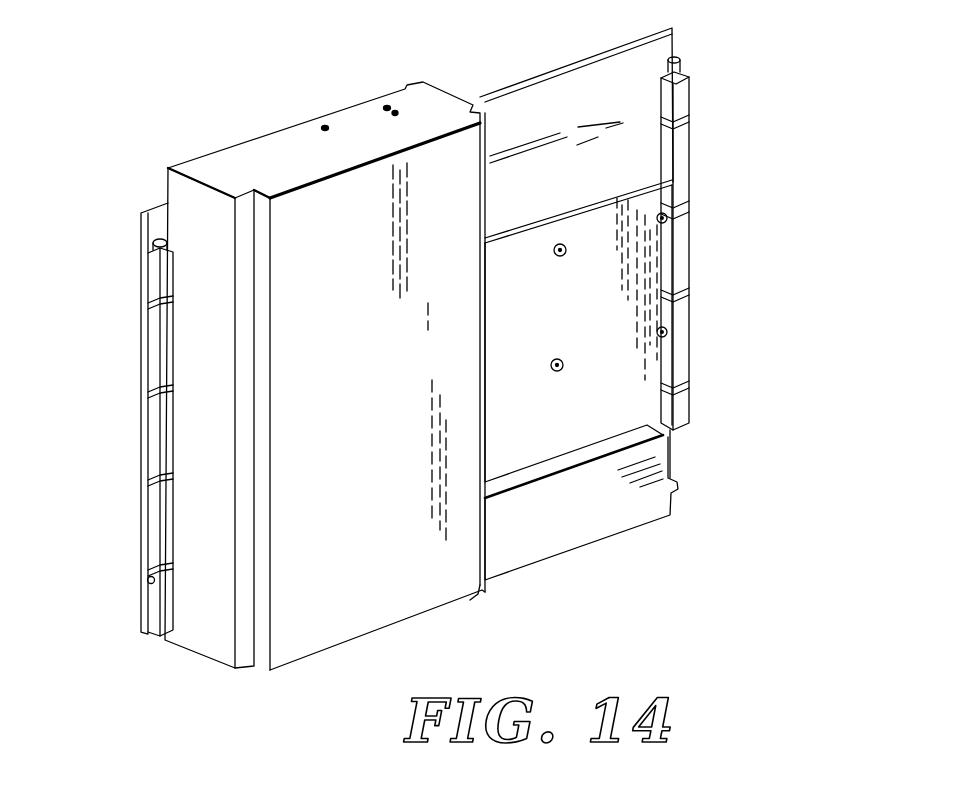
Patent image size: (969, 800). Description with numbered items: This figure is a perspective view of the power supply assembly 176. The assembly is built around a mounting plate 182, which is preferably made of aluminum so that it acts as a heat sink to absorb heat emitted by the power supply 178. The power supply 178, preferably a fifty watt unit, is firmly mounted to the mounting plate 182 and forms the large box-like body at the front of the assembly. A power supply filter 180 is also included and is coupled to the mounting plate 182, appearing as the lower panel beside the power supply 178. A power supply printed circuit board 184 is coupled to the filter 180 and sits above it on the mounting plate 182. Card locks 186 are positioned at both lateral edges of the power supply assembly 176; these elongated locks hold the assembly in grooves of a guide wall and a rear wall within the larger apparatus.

The power supply assembly 176 is at (245, 127).
The power supply 178 is at (412, 498).
The power supply filter 180 is at (609, 517).
The mounting plate 182 is at (612, 82).
The power supply printed circuit board 184 is at (624, 329).
The card locks 186 is at (686, 167).